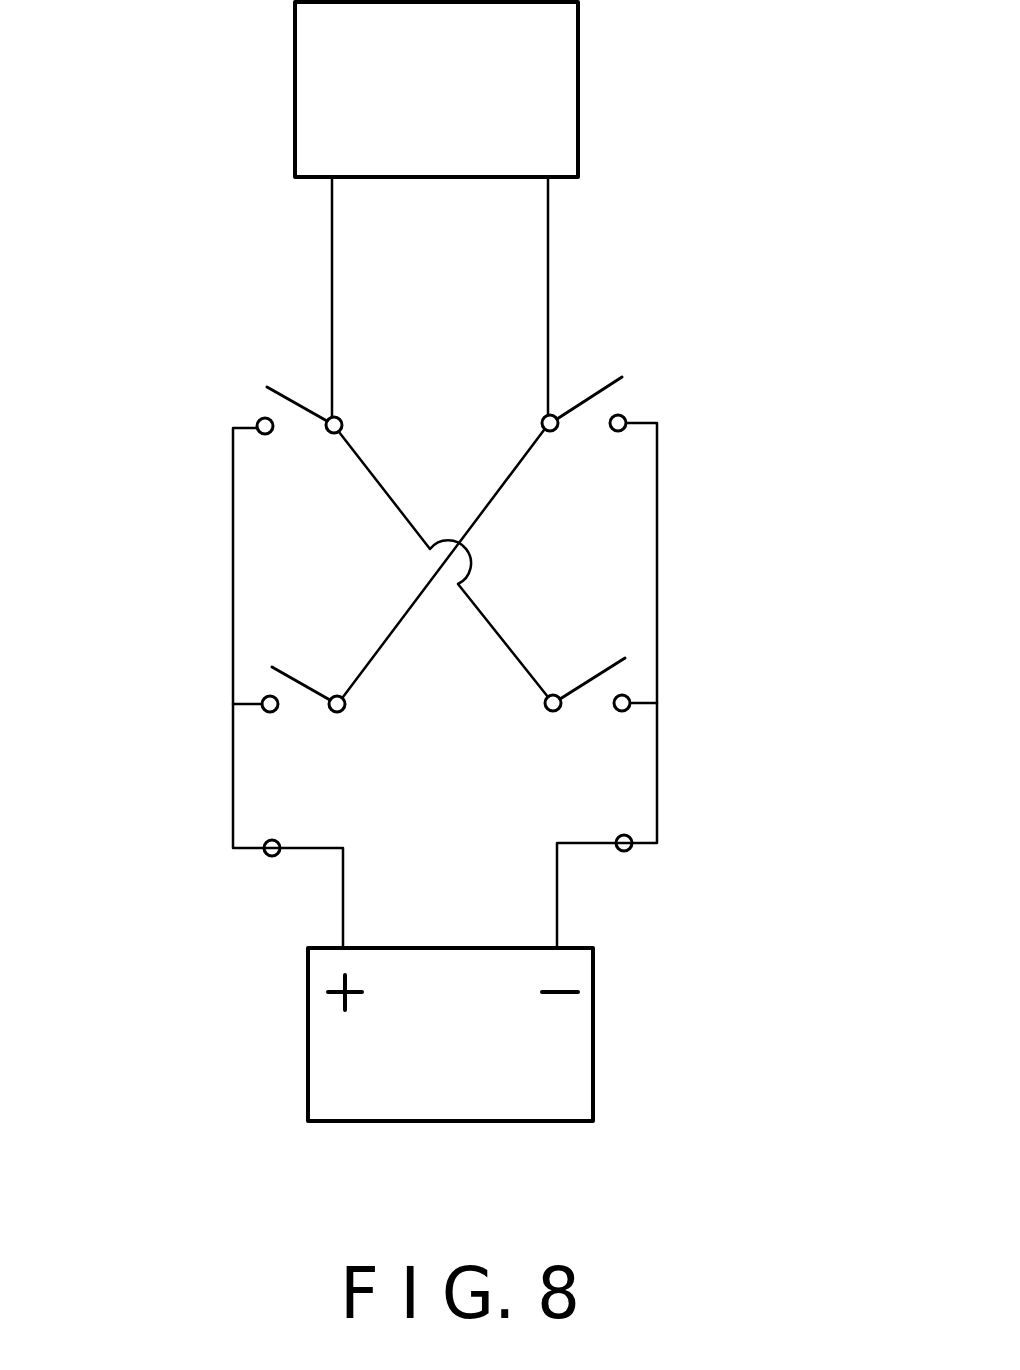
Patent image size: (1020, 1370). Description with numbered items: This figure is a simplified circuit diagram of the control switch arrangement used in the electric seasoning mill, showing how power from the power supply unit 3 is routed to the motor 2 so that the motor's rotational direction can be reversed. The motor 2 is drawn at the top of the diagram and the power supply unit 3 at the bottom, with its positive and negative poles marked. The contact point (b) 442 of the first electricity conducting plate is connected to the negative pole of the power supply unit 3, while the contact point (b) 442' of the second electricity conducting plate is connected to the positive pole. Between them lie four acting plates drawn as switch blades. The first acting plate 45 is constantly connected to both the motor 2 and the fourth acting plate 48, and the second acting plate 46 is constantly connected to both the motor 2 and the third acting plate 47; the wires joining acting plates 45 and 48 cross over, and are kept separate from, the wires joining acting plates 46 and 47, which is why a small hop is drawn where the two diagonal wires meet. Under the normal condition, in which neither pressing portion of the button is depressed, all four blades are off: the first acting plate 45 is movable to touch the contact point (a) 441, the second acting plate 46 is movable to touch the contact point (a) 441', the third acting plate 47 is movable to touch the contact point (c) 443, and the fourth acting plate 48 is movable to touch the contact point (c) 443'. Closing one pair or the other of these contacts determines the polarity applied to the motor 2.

The motor 2 is at (543, 73).
The power supply unit 3 is at (571, 1057).
The first acting plate 45 is at (587, 393).
The second acting plate 46 is at (297, 400).
The third acting plate 47 is at (587, 678).
The fourth acting plate 48 is at (297, 677).
The contact point (a) 441 is at (722, 427).
The contact point (a) 441' is at (178, 384).
The contact point (b) 442 is at (690, 885).
The contact point (b) 442' is at (204, 891).
The contact point (c) 443 is at (722, 696).
The contact point (c) 443' is at (172, 718).